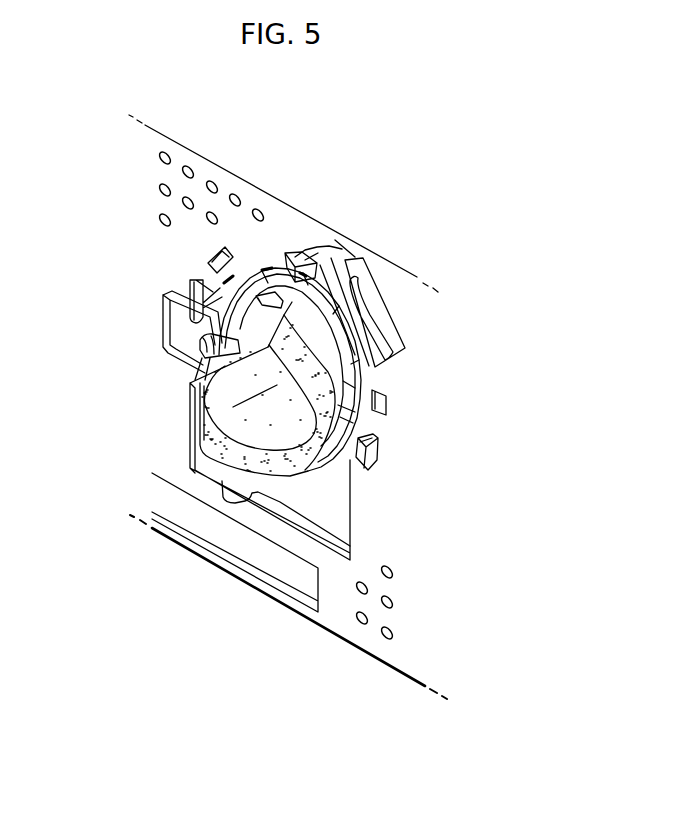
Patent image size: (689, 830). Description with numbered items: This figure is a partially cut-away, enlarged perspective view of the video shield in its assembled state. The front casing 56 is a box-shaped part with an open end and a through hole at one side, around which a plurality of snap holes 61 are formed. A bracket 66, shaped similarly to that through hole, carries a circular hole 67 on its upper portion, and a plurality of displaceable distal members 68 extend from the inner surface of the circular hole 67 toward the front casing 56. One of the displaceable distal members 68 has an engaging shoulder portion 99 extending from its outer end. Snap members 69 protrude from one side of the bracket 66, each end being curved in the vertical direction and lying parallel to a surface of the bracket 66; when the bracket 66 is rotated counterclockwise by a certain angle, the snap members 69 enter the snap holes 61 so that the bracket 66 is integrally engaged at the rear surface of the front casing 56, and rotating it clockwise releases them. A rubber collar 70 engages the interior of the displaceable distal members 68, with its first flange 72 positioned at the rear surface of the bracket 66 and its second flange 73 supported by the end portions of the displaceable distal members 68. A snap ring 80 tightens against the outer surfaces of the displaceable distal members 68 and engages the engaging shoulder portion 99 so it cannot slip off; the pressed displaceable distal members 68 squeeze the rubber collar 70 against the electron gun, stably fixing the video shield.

The front casing 56 is at (377, 276).
The snap holes 61 is at (370, 462).
The bracket 66 is at (220, 463).
The circular hole 67 is at (261, 270).
The displaceable distal members 68 is at (348, 250).
The snap members 69 is at (368, 443).
The rubber collar 70 is at (320, 480).
The first flange 72 is at (272, 334).
The second flange 73 is at (226, 427).
The snap ring 80 is at (160, 319).
The engaging shoulder portion 99 is at (205, 295).